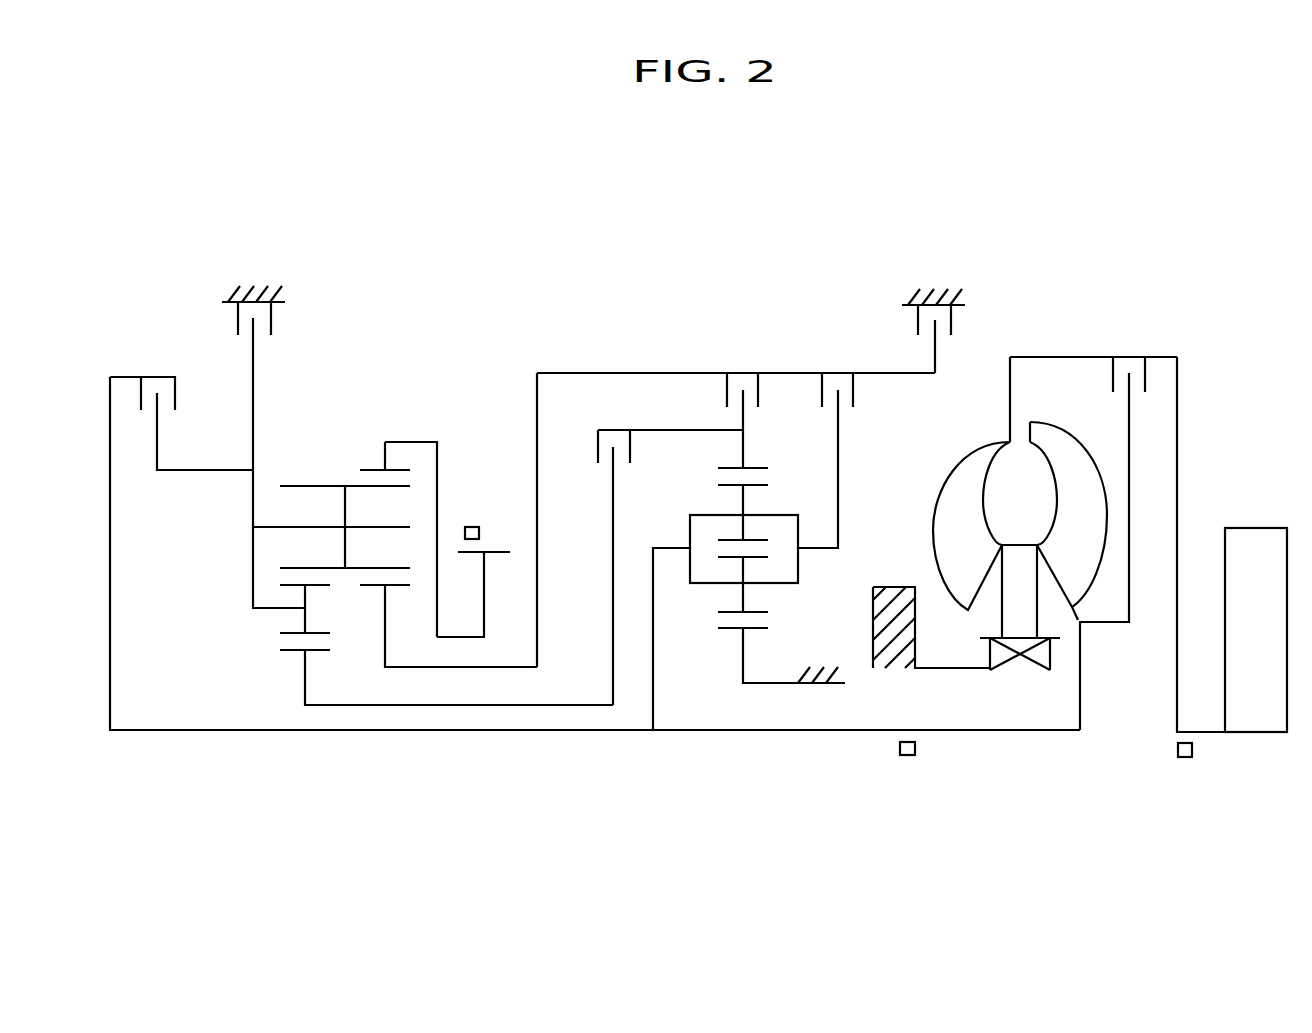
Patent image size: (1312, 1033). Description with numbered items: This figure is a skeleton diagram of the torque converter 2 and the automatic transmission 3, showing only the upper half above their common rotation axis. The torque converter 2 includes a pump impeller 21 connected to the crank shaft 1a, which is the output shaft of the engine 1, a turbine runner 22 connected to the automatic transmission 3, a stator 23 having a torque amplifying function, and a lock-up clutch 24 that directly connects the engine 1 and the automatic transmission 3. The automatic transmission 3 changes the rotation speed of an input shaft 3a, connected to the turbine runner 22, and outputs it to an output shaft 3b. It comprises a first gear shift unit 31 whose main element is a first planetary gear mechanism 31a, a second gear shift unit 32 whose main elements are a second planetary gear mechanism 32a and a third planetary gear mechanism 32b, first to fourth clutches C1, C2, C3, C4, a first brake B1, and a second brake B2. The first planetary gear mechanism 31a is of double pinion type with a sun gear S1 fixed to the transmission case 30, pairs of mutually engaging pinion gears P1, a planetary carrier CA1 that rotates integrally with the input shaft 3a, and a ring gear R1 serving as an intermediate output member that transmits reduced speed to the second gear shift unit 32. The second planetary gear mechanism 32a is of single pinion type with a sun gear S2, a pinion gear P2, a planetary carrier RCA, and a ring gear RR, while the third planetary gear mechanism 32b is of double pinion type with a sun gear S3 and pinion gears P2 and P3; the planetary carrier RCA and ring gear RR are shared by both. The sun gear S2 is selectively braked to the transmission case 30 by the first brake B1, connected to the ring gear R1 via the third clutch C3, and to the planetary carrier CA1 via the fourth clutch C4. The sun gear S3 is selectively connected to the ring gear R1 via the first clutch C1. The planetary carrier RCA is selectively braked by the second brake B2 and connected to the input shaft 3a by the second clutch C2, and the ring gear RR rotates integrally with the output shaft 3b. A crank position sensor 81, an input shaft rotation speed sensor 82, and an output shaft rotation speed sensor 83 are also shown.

The engine 1 is at (1270, 527).
The crank shaft 1a is at (1205, 733).
The torque converter 2 is at (1077, 345).
The pump impeller 21 is at (963, 440).
The turbine runner 22 is at (1088, 440).
The stator 23 is at (1020, 540).
The lock-up clutch 24 is at (1148, 345).
The automatic transmission 3 is at (725, 287).
The input shaft 3a is at (783, 730).
The output shaft 3b is at (497, 550).
The transmission case 30 is at (282, 300).
The first gear shift unit 31 is at (793, 345).
The first planetary gear mechanism 31a is at (693, 676).
The second gear shift unit 32 is at (478, 344).
The second planetary gear mechanism 32a is at (392, 692).
The third planetary gear mechanism 32b is at (287, 692).
The crank position sensor 81 is at (1178, 752).
The input shaft rotation speed sensor 82 is at (907, 755).
The output shaft rotation speed sensor 83 is at (472, 527).
The first brake B1 is at (916, 321).
The second brake B2 is at (236, 318).
The first clutch C1 is at (596, 450).
The second clutch C2 is at (135, 393).
The third clutch C3 is at (725, 392).
The fourth clutch C4 is at (856, 392).
The sun gear S1 is at (735, 632).
The pinion gears P1 is at (760, 487).
The ring gear R1 is at (720, 470).
The planetary carrier CA1 is at (800, 570).
The sun gear S2 is at (400, 575).
The pinion gear P2 is at (355, 572).
The sun gear S3 is at (275, 642).
The pinion gears P3 is at (275, 578).
The ring gear RR is at (360, 470).
The planetary carrier RCA is at (253, 555).